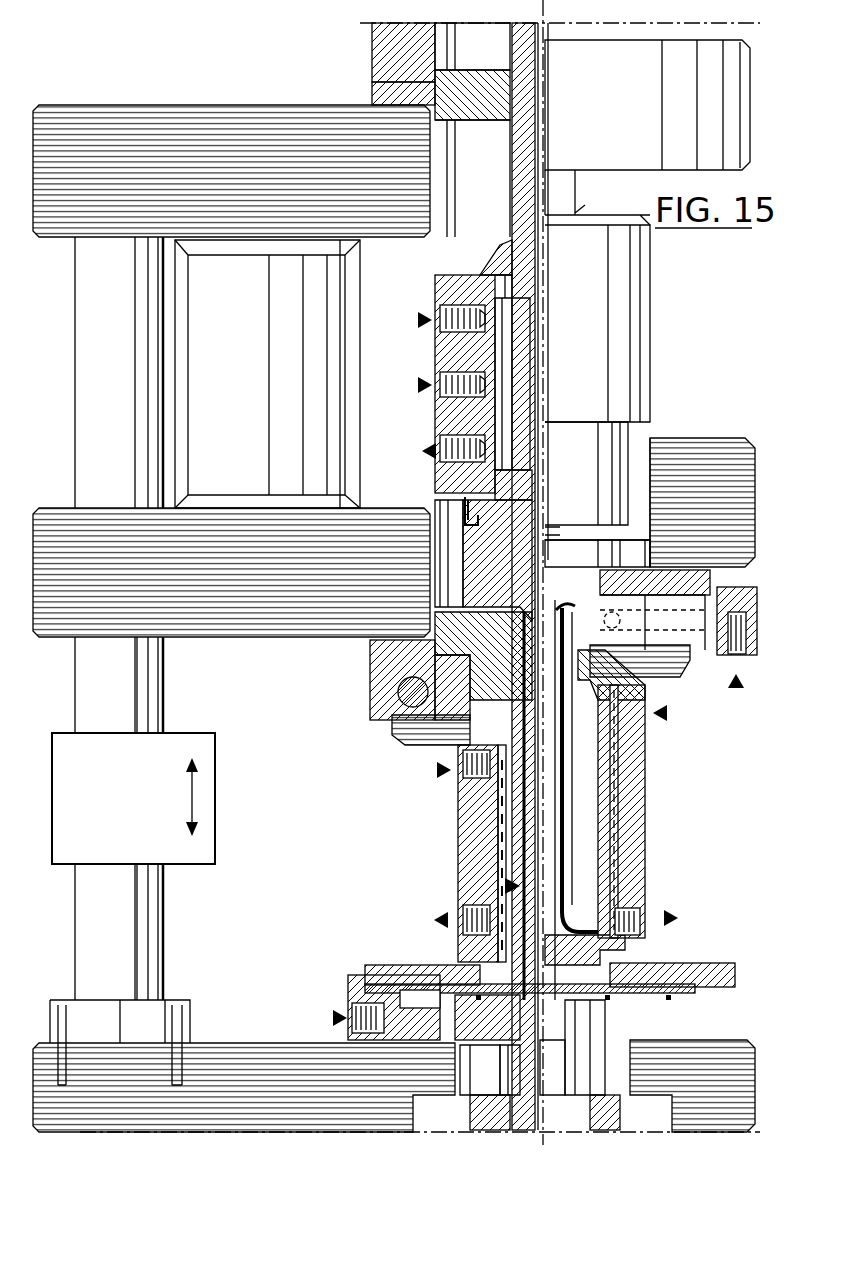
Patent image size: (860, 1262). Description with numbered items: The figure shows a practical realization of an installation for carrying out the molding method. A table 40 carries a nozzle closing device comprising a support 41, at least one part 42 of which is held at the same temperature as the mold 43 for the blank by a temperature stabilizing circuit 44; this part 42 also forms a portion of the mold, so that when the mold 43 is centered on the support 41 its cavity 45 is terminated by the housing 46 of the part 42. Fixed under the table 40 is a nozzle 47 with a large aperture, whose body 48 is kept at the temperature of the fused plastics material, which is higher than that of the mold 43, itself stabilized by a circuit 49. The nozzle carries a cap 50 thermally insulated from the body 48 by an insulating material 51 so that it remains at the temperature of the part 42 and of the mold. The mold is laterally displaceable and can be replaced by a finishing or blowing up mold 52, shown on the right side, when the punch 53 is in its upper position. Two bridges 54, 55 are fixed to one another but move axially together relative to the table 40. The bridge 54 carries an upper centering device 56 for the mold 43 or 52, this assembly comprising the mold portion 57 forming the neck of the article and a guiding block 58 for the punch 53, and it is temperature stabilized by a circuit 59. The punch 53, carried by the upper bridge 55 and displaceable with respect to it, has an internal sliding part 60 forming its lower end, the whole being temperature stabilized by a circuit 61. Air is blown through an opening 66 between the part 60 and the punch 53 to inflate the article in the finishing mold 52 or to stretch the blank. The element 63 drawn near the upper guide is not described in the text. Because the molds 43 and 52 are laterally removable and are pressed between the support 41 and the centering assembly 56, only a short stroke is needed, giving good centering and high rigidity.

The table 40 is at (262, 1042).
The support 41 is at (380, 970).
The part of the support 42 is at (675, 965).
The mold for the blank 43 is at (468, 848).
The temperature stabilizing circuit 44 is at (350, 1000).
The cavity 45 is at (500, 882).
The housing 46 is at (555, 968).
The nozzle 47 is at (600, 1078).
The nozzle body 48 is at (472, 1112).
The temperature stabilizing circuit 49 is at (465, 770).
The cap 50 is at (480, 1070).
The insulating material 51 is at (504, 1070).
The finishing or blowing up mold 52 is at (640, 802).
The punch 53 is at (460, 505).
The bridge 54 is at (185, 628).
The bridge 55 is at (278, 106).
The upper centering device 56 is at (372, 678).
The portion of the mold 57 is at (395, 740).
The guiding block 58 is at (590, 562).
The temperature stabilizing circuit 59 is at (400, 698).
The internal sliding part 60 is at (540, 98).
The temperature stabilizing circuit 61 is at (440, 372).
The bearing block 63 is at (378, 58).
The opening 66 is at (440, 306).